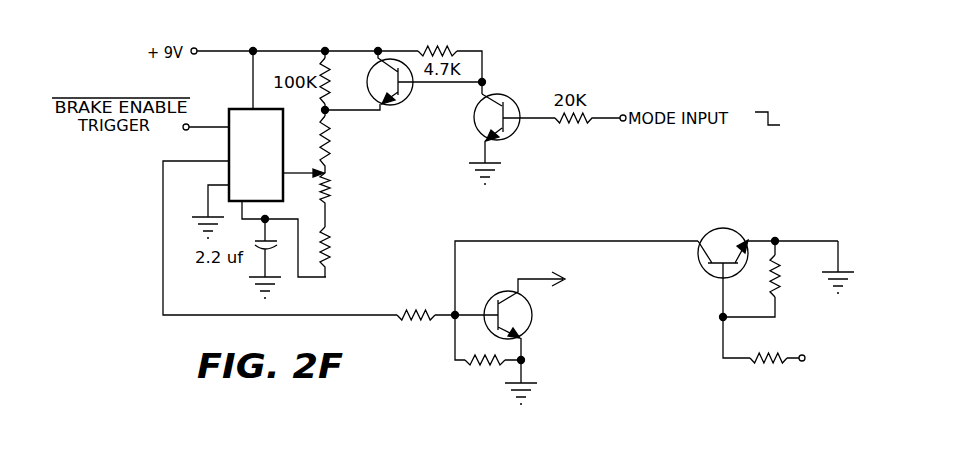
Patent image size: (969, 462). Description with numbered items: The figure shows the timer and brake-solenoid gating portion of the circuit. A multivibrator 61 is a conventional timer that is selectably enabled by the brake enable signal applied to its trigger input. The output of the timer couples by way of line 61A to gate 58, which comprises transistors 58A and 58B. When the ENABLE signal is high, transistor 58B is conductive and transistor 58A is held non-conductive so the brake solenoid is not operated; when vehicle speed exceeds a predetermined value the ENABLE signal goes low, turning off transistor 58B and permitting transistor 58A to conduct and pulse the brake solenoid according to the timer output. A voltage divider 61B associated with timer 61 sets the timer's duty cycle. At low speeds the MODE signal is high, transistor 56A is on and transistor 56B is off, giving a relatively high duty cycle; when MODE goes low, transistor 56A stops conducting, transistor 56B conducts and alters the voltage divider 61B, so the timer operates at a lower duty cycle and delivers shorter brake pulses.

The multivibrator 61 is at (244, 157).
The line 61A is at (163, 282).
The voltage divider 61B is at (337, 165).
The transistor 56A is at (495, 92).
The transistor 56B is at (414, 96).
The gate 58 is at (638, 302).
The transistor 58A is at (533, 318).
The transistor 58B is at (716, 230).